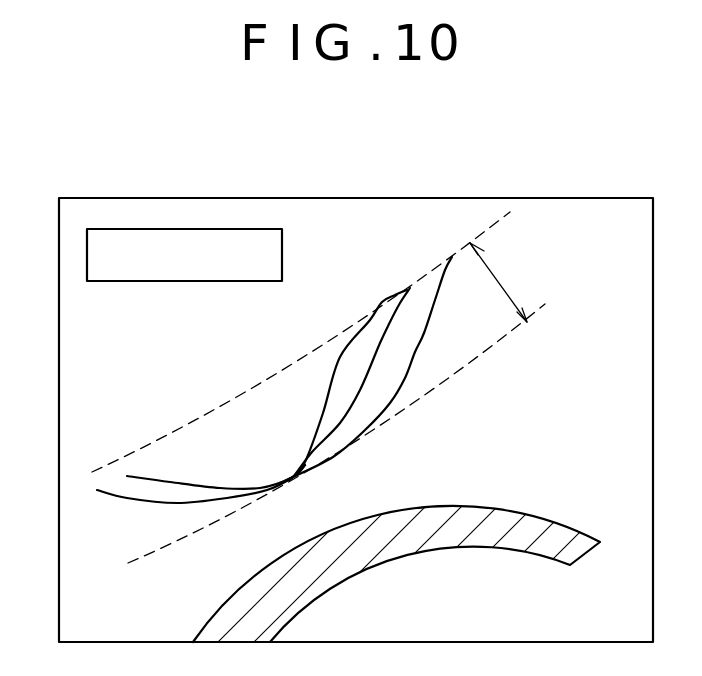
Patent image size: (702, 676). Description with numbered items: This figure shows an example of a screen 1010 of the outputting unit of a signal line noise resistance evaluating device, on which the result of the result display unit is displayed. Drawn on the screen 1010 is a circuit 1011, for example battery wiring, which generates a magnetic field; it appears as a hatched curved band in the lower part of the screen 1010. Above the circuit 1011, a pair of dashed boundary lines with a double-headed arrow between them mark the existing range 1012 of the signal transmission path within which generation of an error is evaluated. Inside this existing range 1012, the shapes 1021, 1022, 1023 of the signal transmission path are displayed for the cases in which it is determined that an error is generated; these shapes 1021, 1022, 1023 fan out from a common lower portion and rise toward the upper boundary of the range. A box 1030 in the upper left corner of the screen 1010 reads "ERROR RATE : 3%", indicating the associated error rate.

The screen 1010 is at (582, 198).
The error rate display 1030 is at (203, 229).
The existing range of the signal transmission path 1012 is at (497, 276).
The shape of the signal transmission path 1021 is at (423, 337).
The shape of the signal transmission path 1022 is at (365, 373).
The shape of the signal transmission path 1023 is at (323, 413).
The circuit 1011 is at (555, 480).